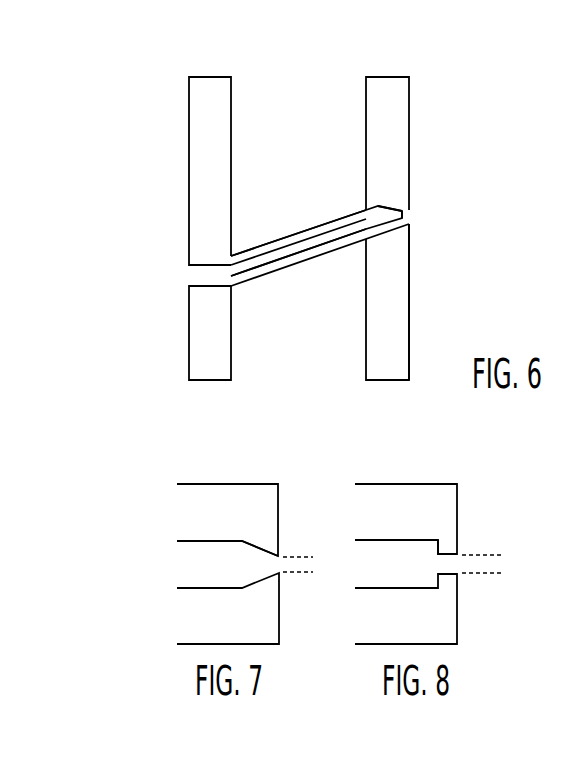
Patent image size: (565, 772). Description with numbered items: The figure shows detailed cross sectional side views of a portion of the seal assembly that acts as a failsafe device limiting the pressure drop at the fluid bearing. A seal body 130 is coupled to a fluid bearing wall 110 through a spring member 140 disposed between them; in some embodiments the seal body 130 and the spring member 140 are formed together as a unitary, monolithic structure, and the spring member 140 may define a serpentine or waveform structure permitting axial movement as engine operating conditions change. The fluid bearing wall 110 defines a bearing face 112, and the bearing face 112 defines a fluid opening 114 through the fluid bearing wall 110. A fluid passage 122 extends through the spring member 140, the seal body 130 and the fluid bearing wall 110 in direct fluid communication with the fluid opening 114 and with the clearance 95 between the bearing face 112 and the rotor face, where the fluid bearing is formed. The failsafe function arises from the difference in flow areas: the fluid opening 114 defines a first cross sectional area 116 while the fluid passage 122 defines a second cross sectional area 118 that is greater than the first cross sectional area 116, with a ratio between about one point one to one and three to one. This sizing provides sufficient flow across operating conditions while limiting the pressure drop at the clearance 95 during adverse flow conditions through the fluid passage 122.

In FIG. 6, the clearance 95 is at (489, 232).
In FIG. 6, the fluid bearing wall 110 is at (390, 305).
In FIG. 6, the bearing face 112 is at (411, 275).
In FIG. 6, the fluid opening 114 is at (412, 208).
In FIG. 7, the fluid opening 114 is at (284, 558).
In FIG. 8, the fluid opening 114 is at (468, 556).
In FIG. 6, the first cross sectional area 116 is at (403, 232).
In FIG. 7, the first cross sectional area 116 is at (299, 605).
In FIG. 8, the first cross sectional area 116 is at (483, 605).
In FIG. 6, the second cross sectional area 118 is at (326, 222).
In FIG. 7, the second cross sectional area 118 is at (206, 540).
In FIG. 8, the second cross sectional area 118 is at (392, 539).
In FIG. 6, the fluid passage 122 is at (341, 249).
In FIG. 7, the fluid passage 122 is at (206, 618).
In FIG. 8, the fluid passage 122 is at (392, 620).
In FIG. 6, the seal body 130 is at (213, 117).
In FIG. 6, the spring member 140 is at (290, 233).